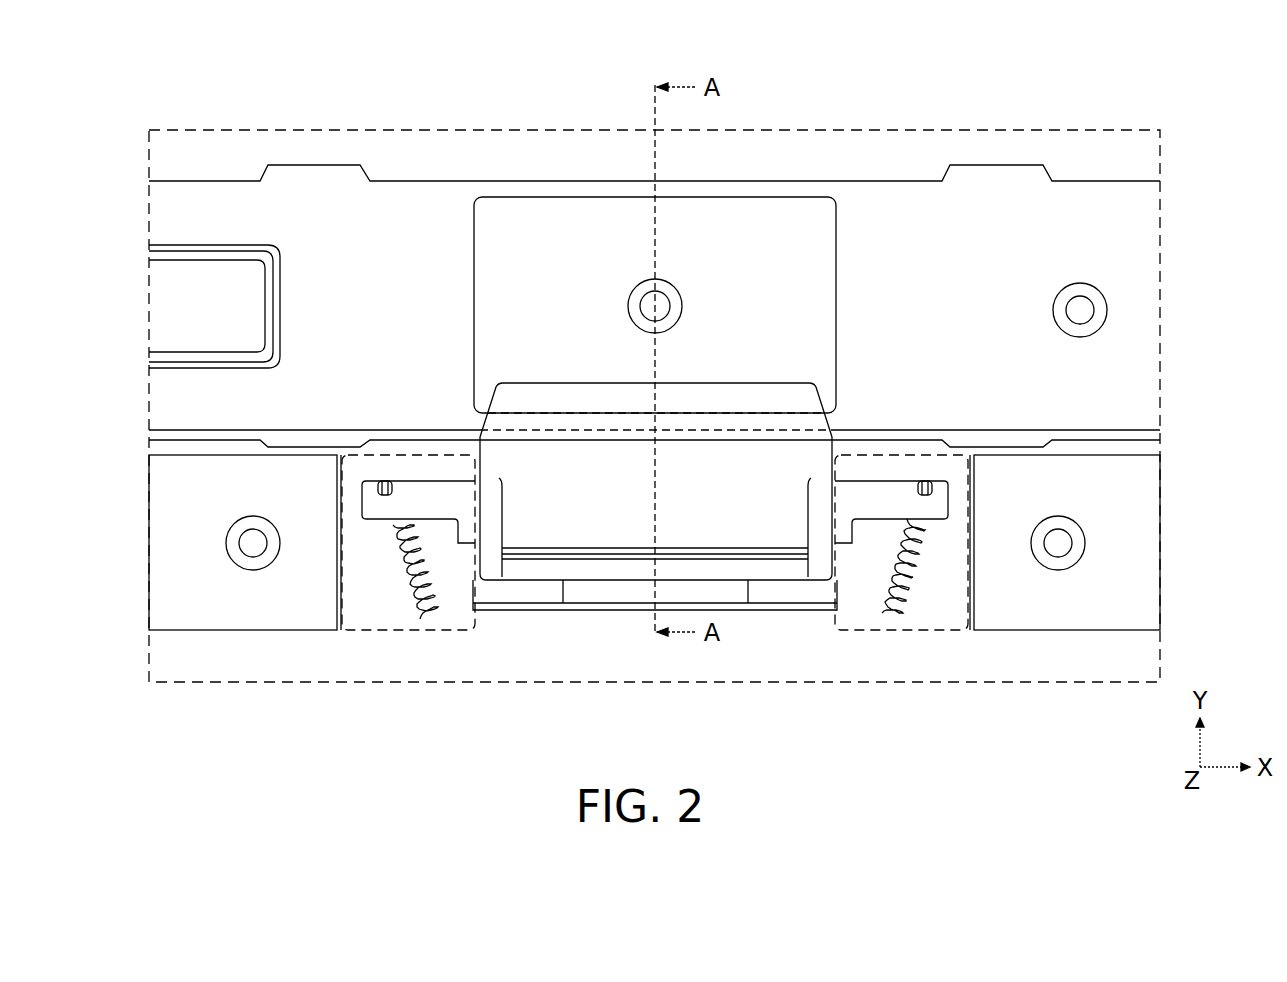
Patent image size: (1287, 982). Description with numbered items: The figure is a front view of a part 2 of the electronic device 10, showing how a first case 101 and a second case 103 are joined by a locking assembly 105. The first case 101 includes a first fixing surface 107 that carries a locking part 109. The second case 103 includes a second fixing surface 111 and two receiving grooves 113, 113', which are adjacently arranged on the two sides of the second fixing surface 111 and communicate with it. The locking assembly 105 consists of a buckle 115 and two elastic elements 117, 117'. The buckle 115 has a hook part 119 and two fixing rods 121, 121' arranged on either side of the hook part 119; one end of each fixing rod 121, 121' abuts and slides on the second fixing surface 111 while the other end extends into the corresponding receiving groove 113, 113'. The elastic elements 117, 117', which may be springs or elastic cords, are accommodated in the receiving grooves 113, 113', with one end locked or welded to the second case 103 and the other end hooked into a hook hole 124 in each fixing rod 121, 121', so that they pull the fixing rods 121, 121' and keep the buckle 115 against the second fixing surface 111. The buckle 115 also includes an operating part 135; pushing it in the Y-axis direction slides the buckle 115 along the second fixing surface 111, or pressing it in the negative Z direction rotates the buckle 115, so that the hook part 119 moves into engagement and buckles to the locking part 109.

The part of the electronic device 2 is at (1100, 128).
The electronic device 10 is at (86, 119).
The first case 101 is at (423, 208).
The second case 103 is at (160, 528).
The locking assembly 105 is at (577, 731).
The first fixing surface 107 is at (567, 238).
The locking part 109 is at (745, 413).
The second fixing surface 111 is at (775, 592).
The receiving groove 113 is at (901, 595).
The receiving groove 113' is at (409, 595).
The buckle 115 is at (503, 468).
The elastic element 117 is at (916, 627).
The elastic element 117' is at (397, 630).
The hook part 119 is at (697, 383).
The fixing rod 121 is at (1031, 531).
The fixing rod 121' is at (276, 531).
The hook hole 124 is at (933, 473).
The operating part 135 is at (598, 560).